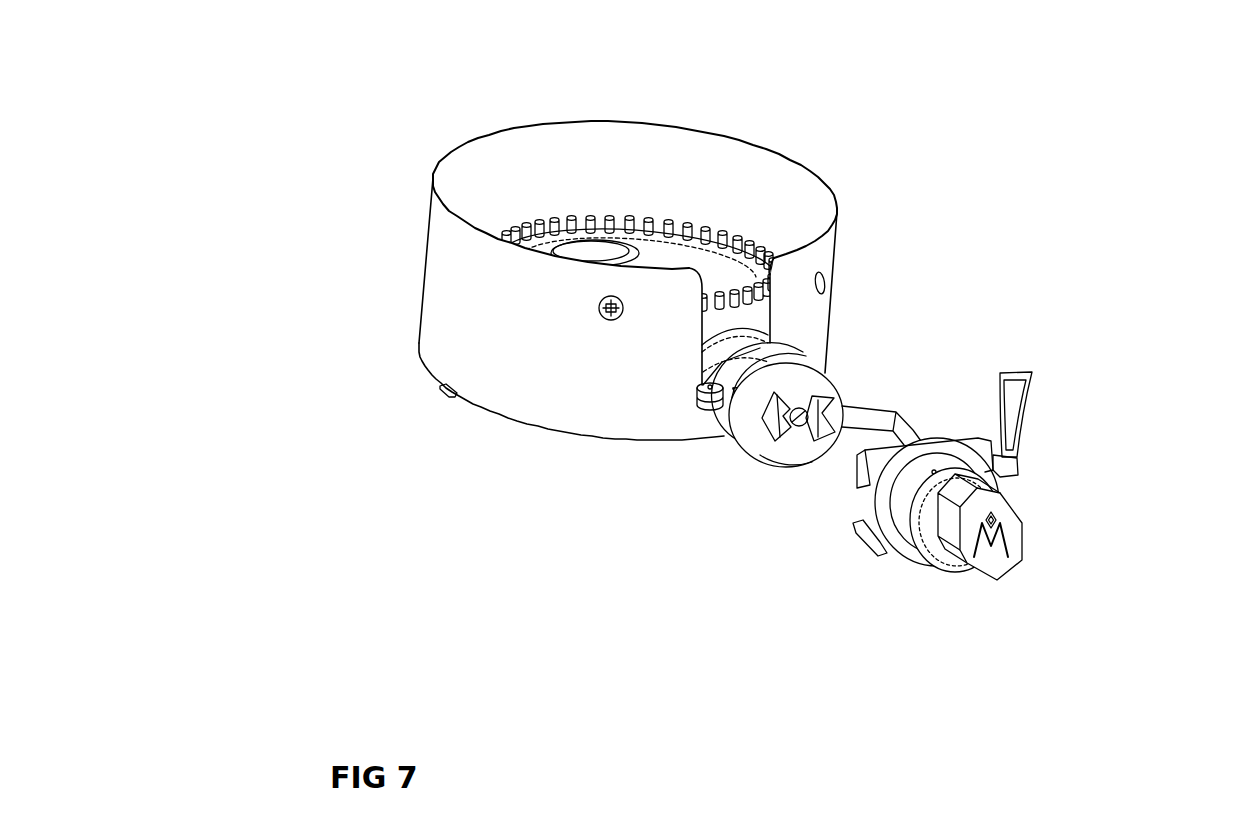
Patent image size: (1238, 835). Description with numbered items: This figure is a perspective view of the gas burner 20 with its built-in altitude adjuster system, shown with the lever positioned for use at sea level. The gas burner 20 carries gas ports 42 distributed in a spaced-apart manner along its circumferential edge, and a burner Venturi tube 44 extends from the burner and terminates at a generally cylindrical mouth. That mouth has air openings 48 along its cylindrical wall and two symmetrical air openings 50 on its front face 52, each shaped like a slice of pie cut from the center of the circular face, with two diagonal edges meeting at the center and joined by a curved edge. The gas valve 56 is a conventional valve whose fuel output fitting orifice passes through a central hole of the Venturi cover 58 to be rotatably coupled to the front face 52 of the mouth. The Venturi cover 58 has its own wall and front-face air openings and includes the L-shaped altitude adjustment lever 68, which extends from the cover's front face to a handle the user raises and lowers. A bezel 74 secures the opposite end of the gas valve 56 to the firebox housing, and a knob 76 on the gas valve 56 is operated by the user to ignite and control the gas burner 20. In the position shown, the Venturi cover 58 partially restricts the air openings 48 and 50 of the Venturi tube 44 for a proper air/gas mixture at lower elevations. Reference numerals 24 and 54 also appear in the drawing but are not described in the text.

The gas burner 20 is at (655, 255).
The housing 24 is at (497, 332).
The gas ports 42 is at (748, 250).
The burner Venturi tube 44 is at (737, 350).
The air openings 48 is at (743, 400).
The air openings 50 is at (772, 420).
The front face 52 is at (770, 435).
The disk rim 54 is at (724, 577).
The gas valve 56 is at (860, 468).
The Venturi cover 58 is at (815, 385).
The altitude adjustment lever 68 is at (910, 428).
The bezel 74 is at (880, 550).
The knob 76 is at (1007, 518).